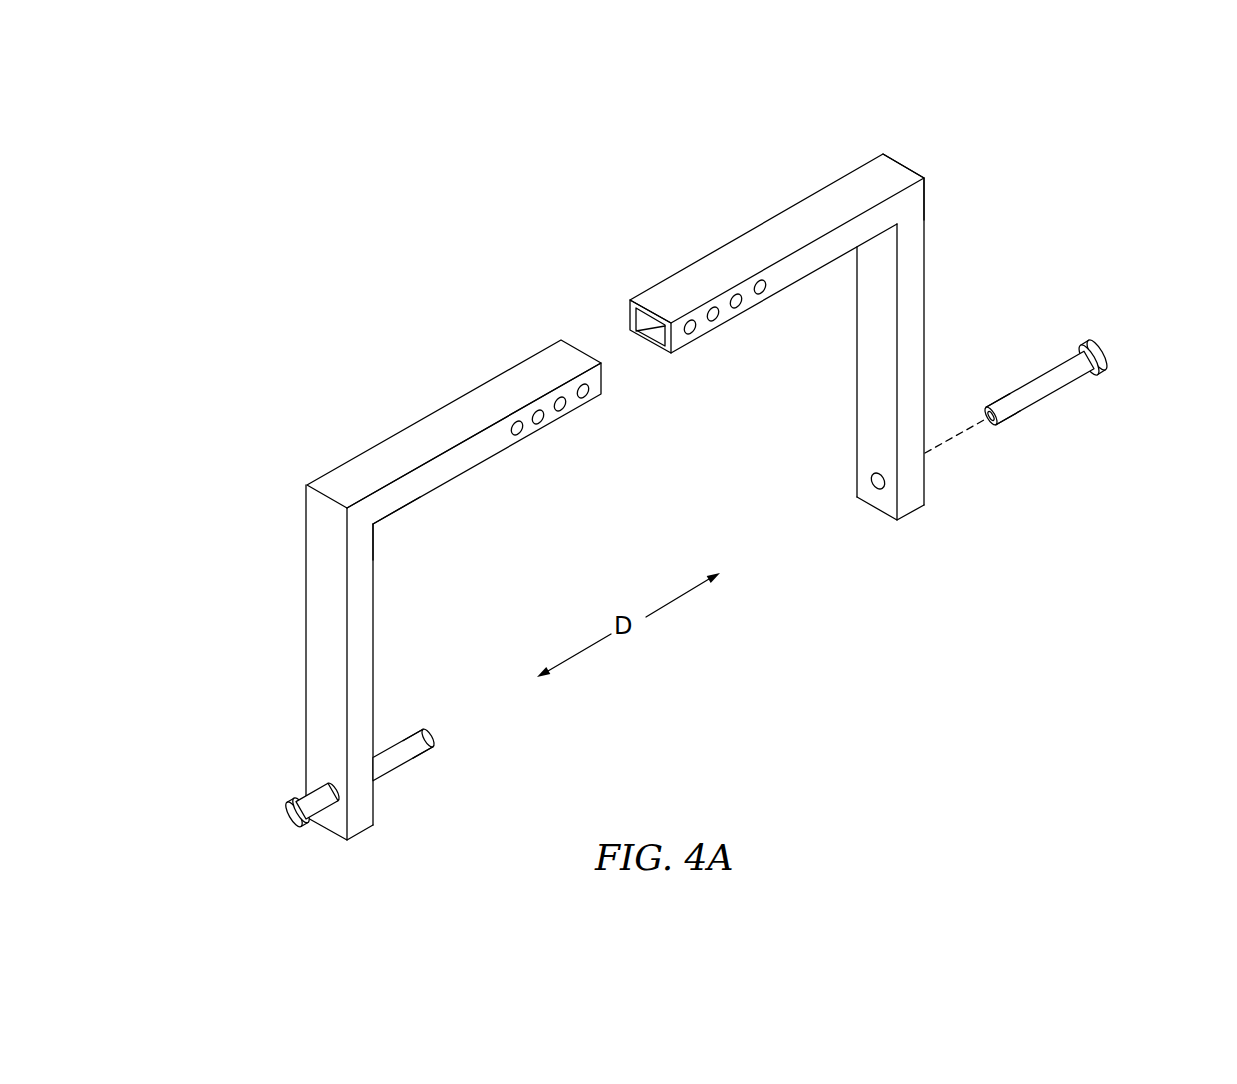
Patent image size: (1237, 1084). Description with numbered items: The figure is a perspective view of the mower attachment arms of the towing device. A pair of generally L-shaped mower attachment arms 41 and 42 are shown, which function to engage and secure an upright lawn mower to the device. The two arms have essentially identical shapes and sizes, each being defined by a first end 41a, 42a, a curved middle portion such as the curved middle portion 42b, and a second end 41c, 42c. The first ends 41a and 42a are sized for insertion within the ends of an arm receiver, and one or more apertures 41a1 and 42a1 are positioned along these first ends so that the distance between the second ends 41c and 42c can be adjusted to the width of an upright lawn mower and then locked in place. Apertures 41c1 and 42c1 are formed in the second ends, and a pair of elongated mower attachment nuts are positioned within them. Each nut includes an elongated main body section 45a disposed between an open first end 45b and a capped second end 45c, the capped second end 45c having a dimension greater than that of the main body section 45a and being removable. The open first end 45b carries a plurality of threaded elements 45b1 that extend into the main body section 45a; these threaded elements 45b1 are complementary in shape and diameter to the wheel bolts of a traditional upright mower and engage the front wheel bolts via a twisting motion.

The mower attachment arm 41 is at (379, 424).
The first end 41a is at (554, 350).
The apertures 41a1 is at (522, 432).
The second end 41c is at (341, 842).
The aperture 41c1 is at (330, 788).
The mower attachment arm 42 is at (806, 182).
The first end 42a is at (664, 290).
The apertures 42a1 is at (695, 334).
The curved middle portion 42b is at (921, 158).
The second end 42c is at (880, 513).
The aperture 42c1 is at (870, 481).
The elongated main body section 45a is at (1040, 376).
The open first end 45b is at (986, 400).
The threaded elements 45b1 is at (989, 430).
The capped second end 45c is at (1120, 342).